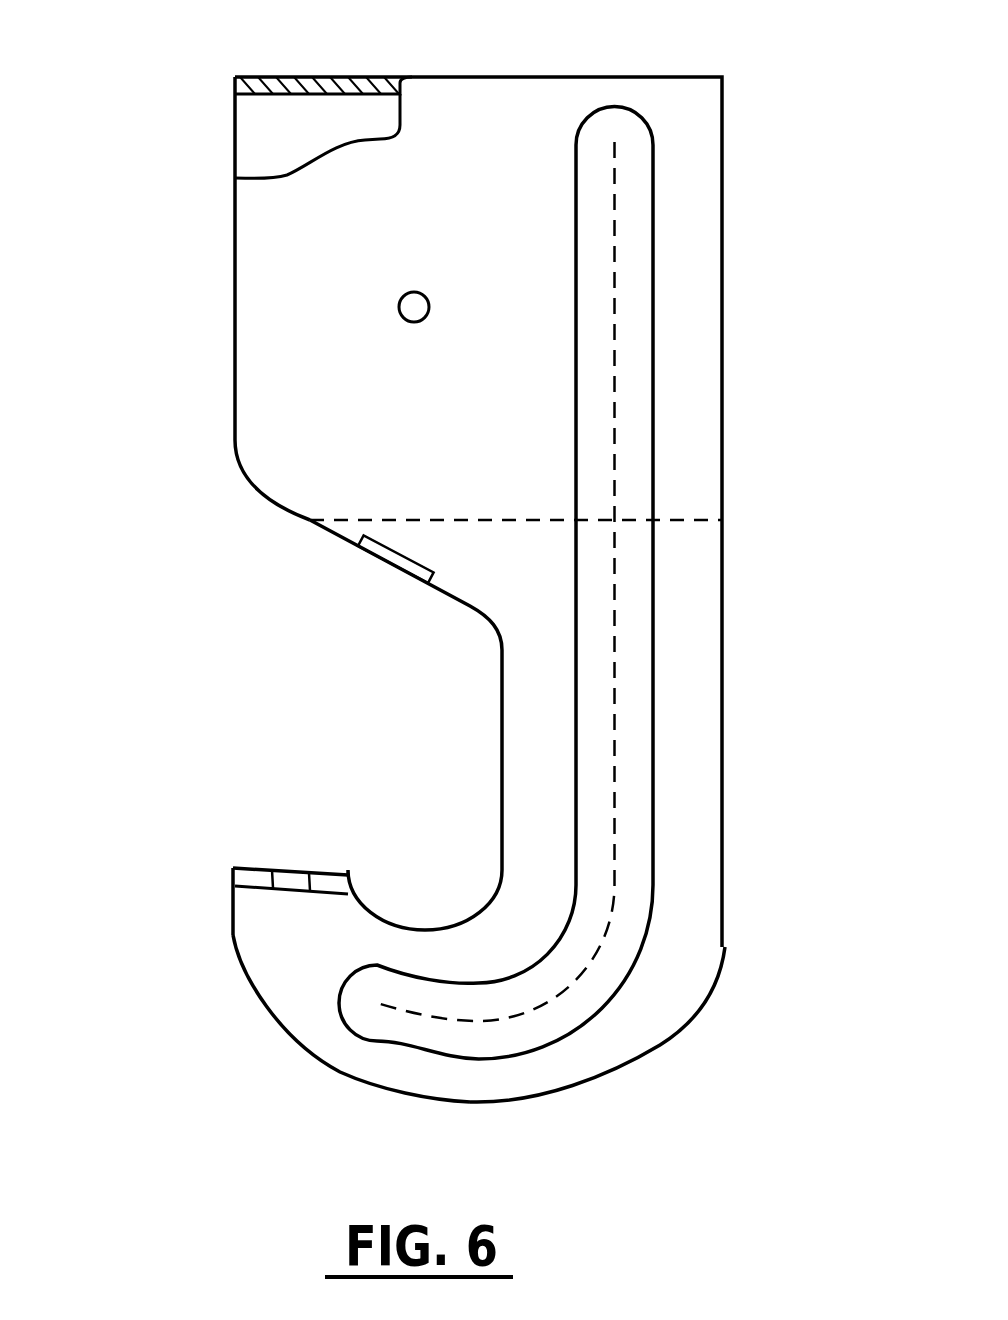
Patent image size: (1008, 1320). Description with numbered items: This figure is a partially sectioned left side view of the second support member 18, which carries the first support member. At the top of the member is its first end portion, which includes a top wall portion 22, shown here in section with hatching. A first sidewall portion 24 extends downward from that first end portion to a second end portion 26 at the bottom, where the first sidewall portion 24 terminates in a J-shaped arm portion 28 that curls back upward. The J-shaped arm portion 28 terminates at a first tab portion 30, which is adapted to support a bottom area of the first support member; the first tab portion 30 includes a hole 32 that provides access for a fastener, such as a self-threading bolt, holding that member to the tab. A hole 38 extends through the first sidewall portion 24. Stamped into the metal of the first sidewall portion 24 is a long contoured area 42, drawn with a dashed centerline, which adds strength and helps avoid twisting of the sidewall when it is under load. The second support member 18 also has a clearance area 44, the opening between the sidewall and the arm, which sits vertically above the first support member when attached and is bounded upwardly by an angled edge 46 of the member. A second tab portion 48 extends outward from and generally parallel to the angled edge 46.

The second support member 18 is at (737, 592).
The top wall portion 22 is at (280, 77).
The first sidewall portion 24 is at (433, 433).
The second end portion 26 is at (597, 1120).
The J-shaped arm portion 28 is at (327, 1030).
The first tab portion 30 is at (258, 870).
The hole 32 is at (287, 878).
The hole 38 is at (400, 292).
The contoured area 42 is at (627, 317).
The clearance area 44 is at (293, 730).
The angled edge 46 is at (304, 522).
The second tab portion 48 is at (387, 555).